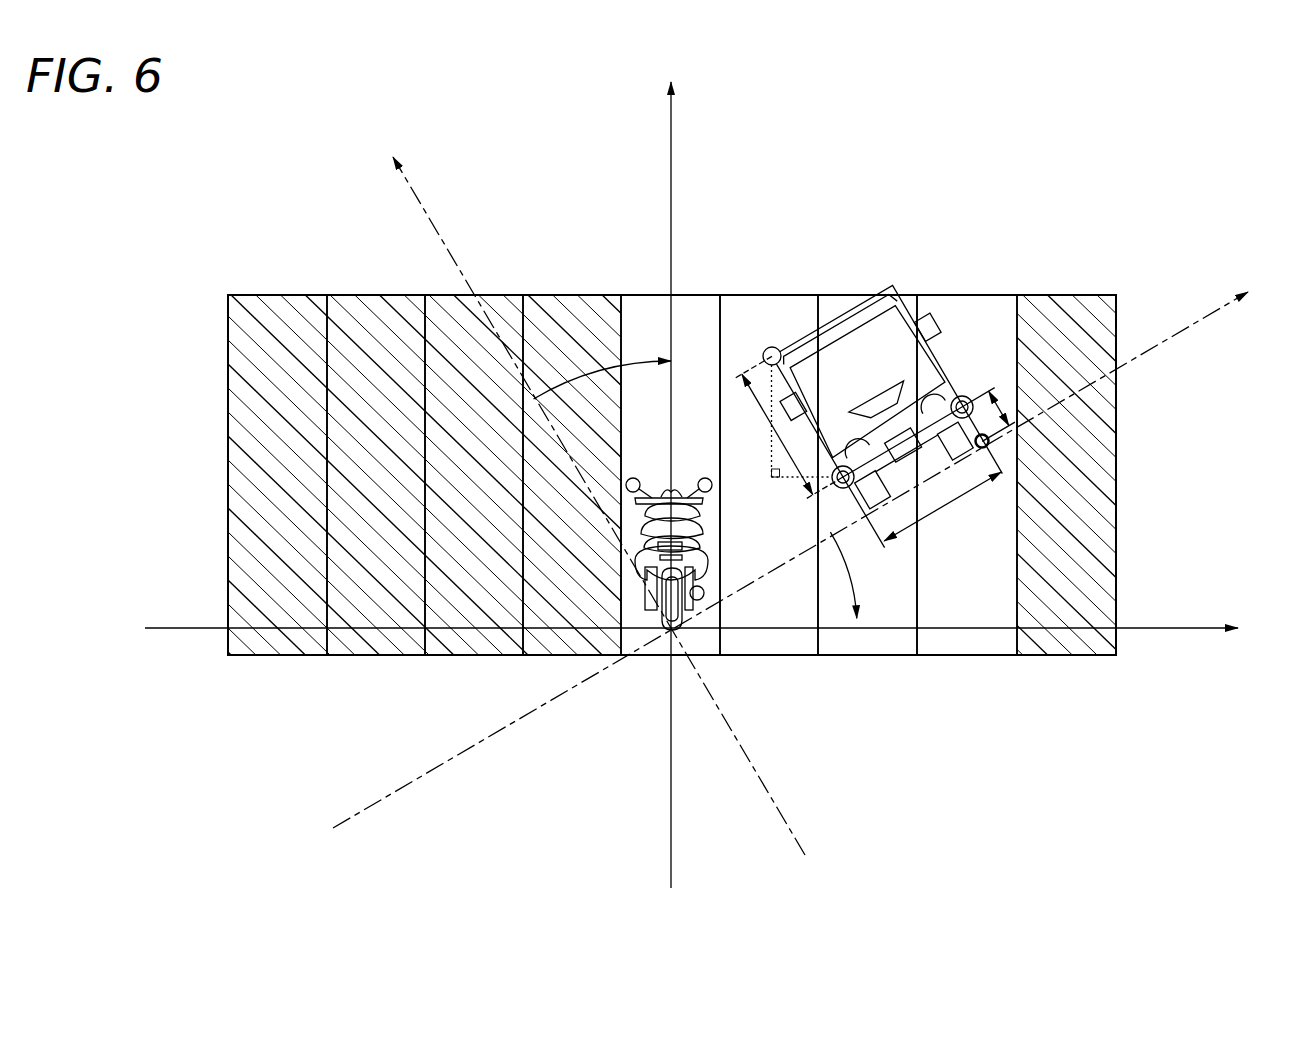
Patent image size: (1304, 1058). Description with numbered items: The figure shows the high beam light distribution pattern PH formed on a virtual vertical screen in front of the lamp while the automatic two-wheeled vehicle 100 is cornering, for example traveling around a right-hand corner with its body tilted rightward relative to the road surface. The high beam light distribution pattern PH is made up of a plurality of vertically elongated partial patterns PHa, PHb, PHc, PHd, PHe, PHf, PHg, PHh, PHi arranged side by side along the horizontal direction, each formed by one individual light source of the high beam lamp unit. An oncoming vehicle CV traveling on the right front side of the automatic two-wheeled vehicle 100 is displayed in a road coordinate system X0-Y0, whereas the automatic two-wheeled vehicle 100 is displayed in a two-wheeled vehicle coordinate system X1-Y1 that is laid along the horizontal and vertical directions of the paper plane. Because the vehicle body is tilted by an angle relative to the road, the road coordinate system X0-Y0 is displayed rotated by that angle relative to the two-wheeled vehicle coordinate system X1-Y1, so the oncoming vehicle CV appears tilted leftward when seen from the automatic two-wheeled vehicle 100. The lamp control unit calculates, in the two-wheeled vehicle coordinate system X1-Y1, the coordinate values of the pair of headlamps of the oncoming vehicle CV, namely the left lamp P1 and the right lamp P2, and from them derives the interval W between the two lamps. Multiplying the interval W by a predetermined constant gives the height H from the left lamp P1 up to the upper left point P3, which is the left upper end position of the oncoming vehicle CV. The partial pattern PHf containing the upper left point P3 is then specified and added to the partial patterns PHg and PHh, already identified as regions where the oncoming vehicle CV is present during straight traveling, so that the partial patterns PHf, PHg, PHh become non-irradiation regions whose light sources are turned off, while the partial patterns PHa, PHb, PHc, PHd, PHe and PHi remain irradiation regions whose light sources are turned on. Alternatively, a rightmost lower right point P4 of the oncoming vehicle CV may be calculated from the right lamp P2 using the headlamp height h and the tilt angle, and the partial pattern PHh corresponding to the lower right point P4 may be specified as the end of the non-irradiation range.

The high beam light distribution pattern PH is at (228, 443).
The partial pattern PHa is at (281, 305).
The partial pattern PHb is at (374, 305).
The partial pattern PHc is at (500, 305).
The partial pattern PHd is at (580, 305).
The partial pattern PHe is at (654, 305).
The partial pattern PHf is at (777, 305).
The partial pattern PHg is at (907, 300).
The partial pattern PHh is at (979, 305).
The partial pattern PHi is at (1066, 305).
The automatic two-wheeled vehicle 100 is at (638, 513).
The oncoming vehicle CV is at (935, 371).
The left lamp P1 is at (834, 487).
The right lamp P2 is at (966, 398).
The upper left point P3 is at (763, 352).
The lower right point P4 is at (990, 443).
The road coordinate system axis X0 is at (807, 549).
The road coordinate system axis Y0 is at (590, 491).
The two-wheeled vehicle coordinate system axis X1 is at (708, 629).
The two-wheeled vehicle coordinate system axis Y1 is at (671, 470).
The height H is at (776, 433).
The interval W is at (942, 506).
The headlamp height h is at (1000, 407).